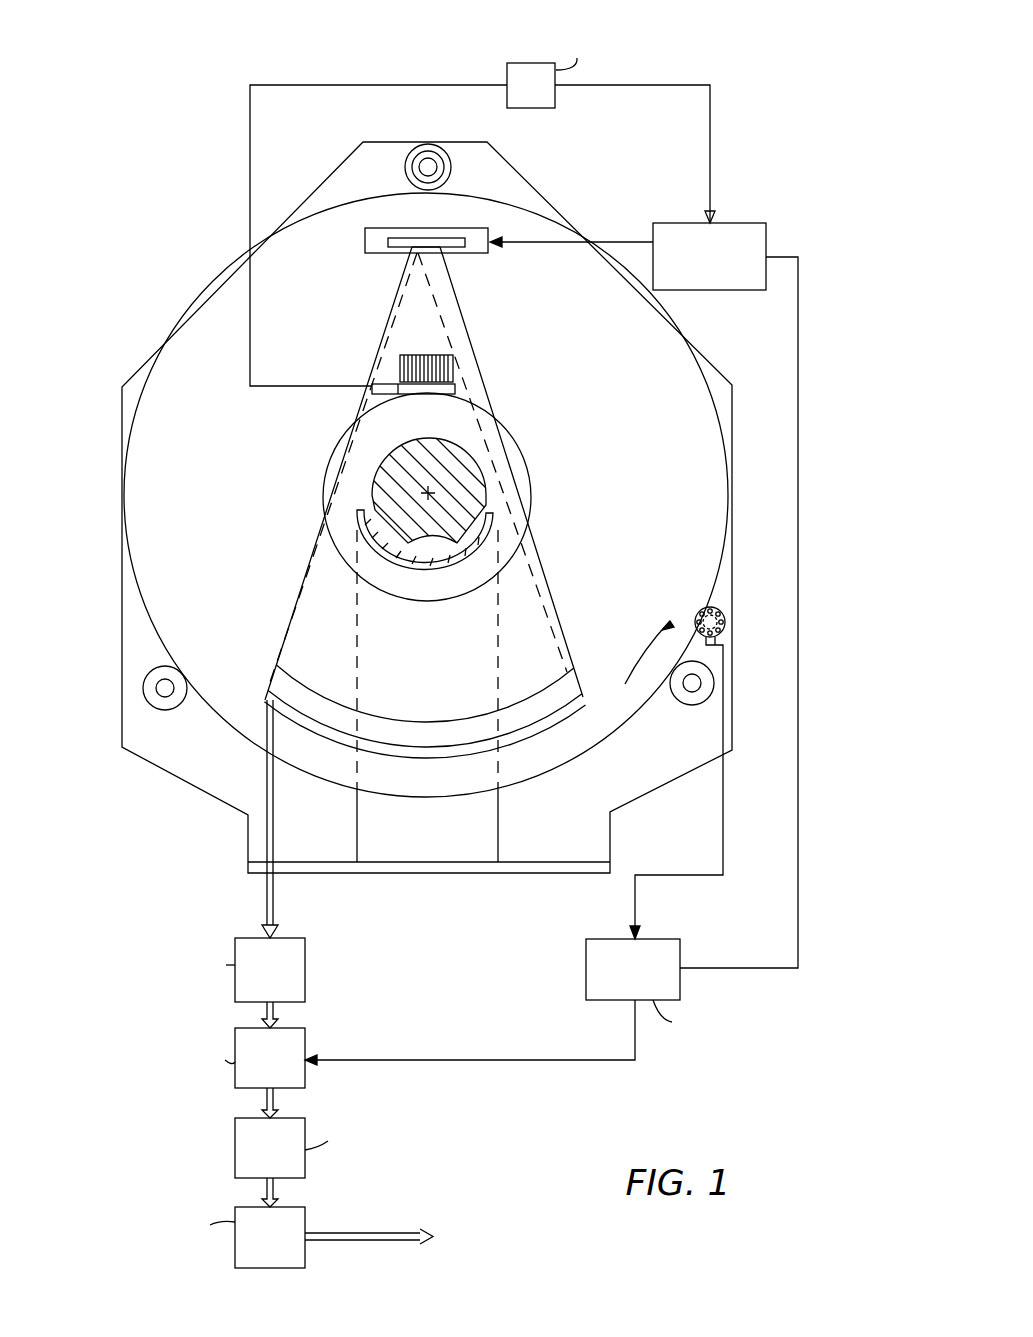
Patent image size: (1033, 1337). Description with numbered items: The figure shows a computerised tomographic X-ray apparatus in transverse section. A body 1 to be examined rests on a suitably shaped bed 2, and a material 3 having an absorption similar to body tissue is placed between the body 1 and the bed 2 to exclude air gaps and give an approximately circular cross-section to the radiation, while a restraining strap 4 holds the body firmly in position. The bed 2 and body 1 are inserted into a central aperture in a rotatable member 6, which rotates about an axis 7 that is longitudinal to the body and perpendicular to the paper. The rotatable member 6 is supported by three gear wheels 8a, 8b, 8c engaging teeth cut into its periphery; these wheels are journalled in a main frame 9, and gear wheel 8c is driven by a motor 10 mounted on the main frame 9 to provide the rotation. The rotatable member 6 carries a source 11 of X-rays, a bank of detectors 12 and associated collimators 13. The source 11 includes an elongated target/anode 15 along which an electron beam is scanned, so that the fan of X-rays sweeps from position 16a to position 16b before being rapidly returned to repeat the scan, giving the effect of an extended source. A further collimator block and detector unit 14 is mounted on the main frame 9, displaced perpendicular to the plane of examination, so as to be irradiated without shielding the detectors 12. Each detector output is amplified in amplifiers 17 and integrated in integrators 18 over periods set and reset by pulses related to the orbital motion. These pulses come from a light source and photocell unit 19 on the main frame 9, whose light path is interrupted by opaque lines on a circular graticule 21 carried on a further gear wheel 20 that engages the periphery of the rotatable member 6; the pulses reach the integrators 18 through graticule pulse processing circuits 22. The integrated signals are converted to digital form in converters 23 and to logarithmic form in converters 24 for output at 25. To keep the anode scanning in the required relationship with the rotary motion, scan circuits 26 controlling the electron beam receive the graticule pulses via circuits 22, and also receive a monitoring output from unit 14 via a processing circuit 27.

The body 1 is at (430, 457).
The bed 2 is at (428, 568).
The material 3 is at (417, 553).
The restraining strap 4 is at (478, 471).
The rotatable member 6 is at (694, 484).
The axis 7 is at (426, 493).
The gear wheel 8a is at (692, 705).
The gear wheel 8b is at (165, 710).
The gear wheel 8c is at (421, 146).
The main frame 9 is at (716, 374).
The motor 10 is at (418, 167).
The source of x-rays 11 is at (474, 236).
The bank of detectors 12 is at (516, 740).
The collimators 13 is at (580, 703).
The collimator block and detector unit 14 is at (395, 378).
The target/anode 15 is at (420, 246).
The position of X-ray fan 16a is at (428, 282).
The position of X-ray fan 16b is at (430, 293).
The amplifiers 17 is at (308, 964).
The integrators 18 is at (305, 1038).
The light source and photocell unit 19 is at (725, 656).
The gear wheel 20 is at (726, 622).
The circular graticule 21 is at (722, 608).
The graticule pulse processing circuits 22 is at (586, 968).
The A/D converters 23 is at (235, 1140).
The log converters 24 is at (305, 1256).
The output 25 is at (387, 1237).
The scan circuits 26 is at (656, 223).
The processing circuit 27 is at (556, 108).